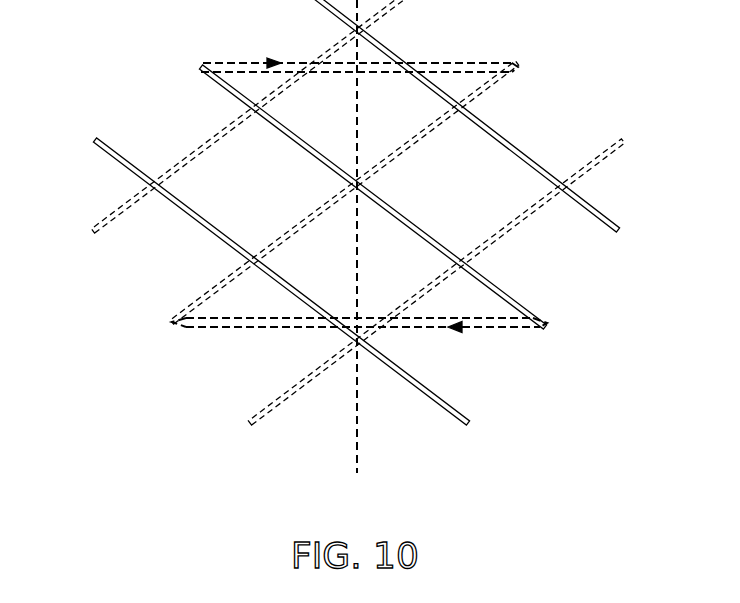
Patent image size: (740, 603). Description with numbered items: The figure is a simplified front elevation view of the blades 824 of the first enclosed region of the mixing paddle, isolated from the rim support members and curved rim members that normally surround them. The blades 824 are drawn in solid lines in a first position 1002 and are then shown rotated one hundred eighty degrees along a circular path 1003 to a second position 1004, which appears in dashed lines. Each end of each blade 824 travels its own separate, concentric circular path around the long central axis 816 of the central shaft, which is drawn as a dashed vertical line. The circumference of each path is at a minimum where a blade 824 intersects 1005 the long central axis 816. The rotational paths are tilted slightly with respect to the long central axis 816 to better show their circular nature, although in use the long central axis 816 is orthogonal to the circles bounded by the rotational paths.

The blades 824 is at (212, 92).
The first position 1002 is at (201, 67).
The circular path 1003 is at (297, 62).
The second position 1004 is at (514, 65).
The intersection 1005 is at (358, 184).
The long central axis 816 is at (357, 430).